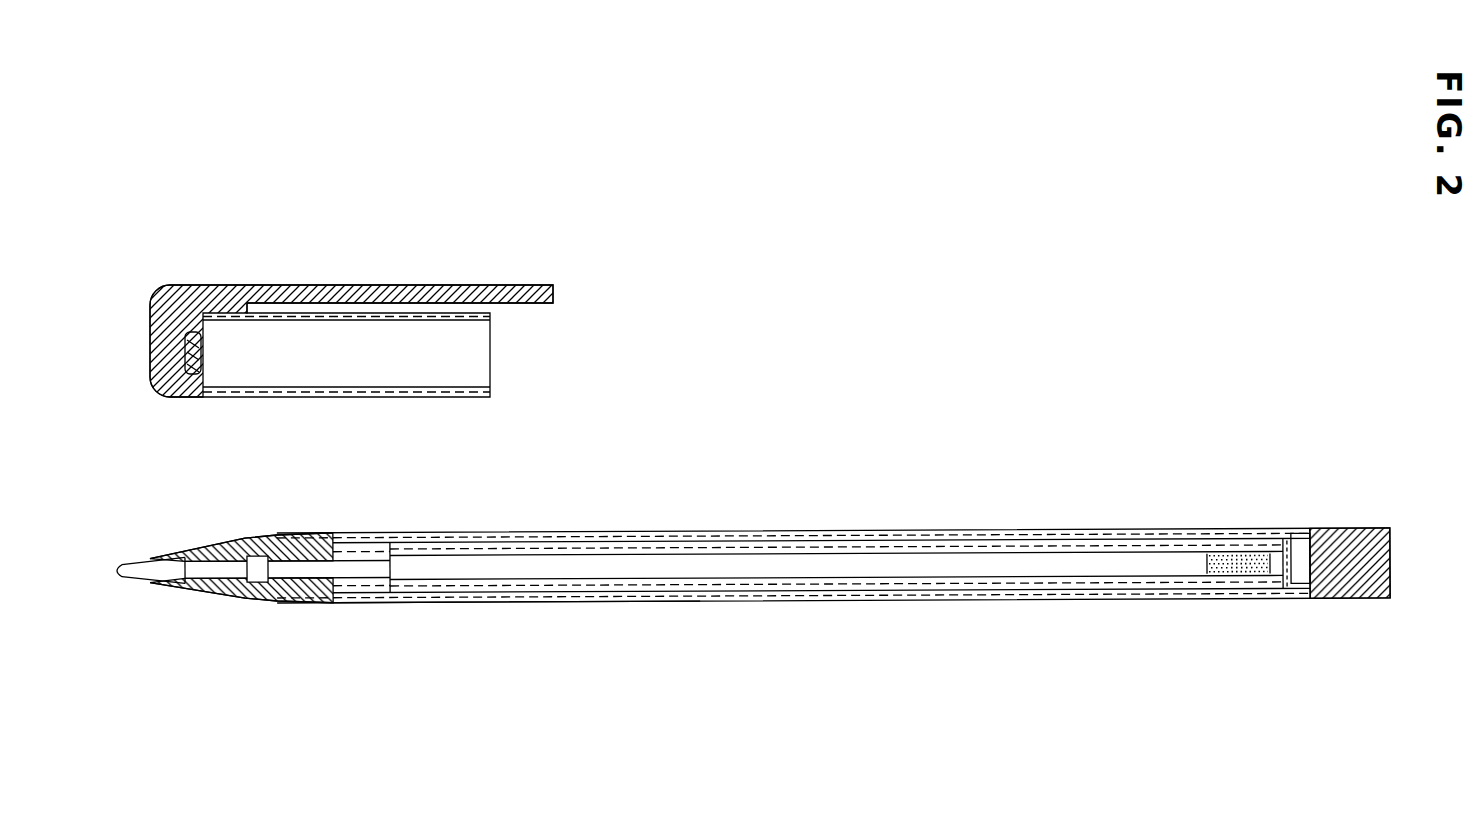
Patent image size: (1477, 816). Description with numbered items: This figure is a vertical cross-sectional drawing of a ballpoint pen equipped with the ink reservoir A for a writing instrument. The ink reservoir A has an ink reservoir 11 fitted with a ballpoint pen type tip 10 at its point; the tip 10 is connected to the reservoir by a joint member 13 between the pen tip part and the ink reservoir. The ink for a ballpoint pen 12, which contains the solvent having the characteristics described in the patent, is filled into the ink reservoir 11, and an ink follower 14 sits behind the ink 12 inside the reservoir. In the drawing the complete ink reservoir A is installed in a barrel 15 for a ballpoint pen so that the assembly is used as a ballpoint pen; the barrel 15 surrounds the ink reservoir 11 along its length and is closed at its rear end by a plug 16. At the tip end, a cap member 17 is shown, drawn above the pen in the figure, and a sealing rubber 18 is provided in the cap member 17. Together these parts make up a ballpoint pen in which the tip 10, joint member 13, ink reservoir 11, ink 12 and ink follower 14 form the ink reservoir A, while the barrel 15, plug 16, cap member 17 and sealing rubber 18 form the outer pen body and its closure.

The ballpoint pen type tip 10 is at (135, 568).
The ink reservoir 11 is at (470, 552).
The ink for a ballpoint pen 12 is at (573, 563).
The joint member 13 is at (233, 595).
The ink follower 14 is at (1238, 555).
The barrel 15 is at (443, 604).
The plug 16 is at (1368, 595).
The cap member 17 is at (162, 291).
The sealing rubber 18 is at (197, 372).
The ink reservoir for a writing instrument A is at (737, 543).